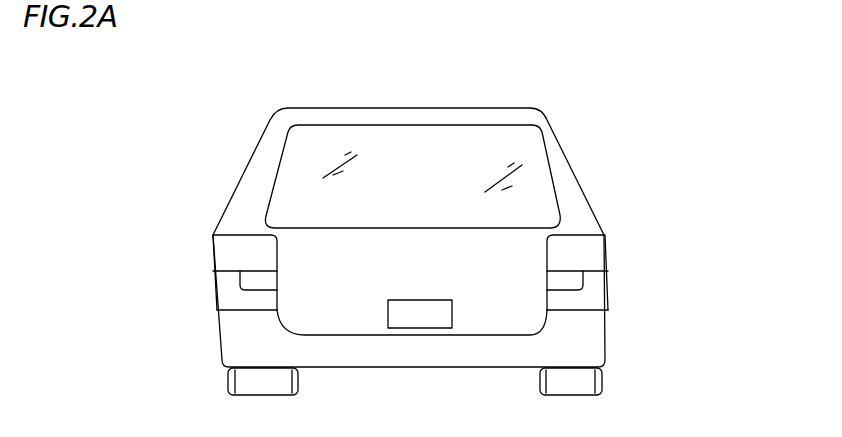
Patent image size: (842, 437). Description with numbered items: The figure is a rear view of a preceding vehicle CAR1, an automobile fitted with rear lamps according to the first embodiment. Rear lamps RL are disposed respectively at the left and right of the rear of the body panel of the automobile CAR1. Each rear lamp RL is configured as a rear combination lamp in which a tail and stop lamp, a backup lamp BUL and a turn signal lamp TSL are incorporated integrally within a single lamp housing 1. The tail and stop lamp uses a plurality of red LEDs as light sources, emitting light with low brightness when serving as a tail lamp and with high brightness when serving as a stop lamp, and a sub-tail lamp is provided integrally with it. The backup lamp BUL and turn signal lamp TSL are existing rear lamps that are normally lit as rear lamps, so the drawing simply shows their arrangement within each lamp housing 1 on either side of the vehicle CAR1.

The preceding vehicle CAR1 is at (417, 108).
The lamp housing 1 is at (446, 261).
The rear lamp RL is at (240, 234).
The backup lamp BUL is at (223, 288).
The turn signal lamp TSL is at (257, 283).